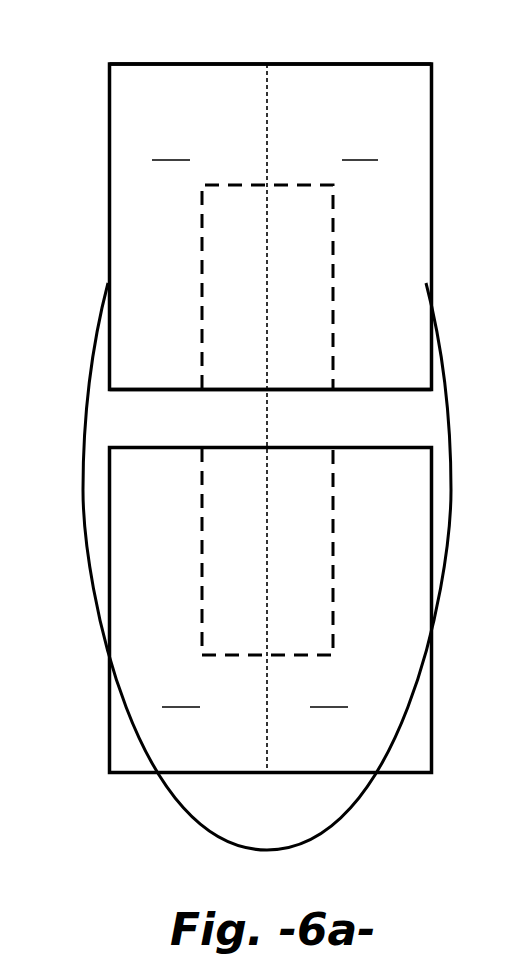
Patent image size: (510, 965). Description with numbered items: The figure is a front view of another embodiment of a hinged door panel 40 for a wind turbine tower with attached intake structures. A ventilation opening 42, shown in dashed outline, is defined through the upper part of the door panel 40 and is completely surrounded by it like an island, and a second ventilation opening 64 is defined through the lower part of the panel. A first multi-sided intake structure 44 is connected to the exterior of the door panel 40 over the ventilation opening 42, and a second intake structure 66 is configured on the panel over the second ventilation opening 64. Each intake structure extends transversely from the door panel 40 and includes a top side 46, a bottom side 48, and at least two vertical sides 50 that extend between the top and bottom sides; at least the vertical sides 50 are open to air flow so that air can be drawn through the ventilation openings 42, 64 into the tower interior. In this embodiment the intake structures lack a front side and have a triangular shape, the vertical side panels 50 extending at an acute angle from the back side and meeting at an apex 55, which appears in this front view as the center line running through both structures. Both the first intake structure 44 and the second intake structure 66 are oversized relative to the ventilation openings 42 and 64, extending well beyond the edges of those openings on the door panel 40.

The door panel 40 is at (108, 423).
The ventilation opening 42 is at (335, 261).
The multi-sided intake structure 44 is at (436, 93).
The top side 46 is at (212, 64).
The bottom side 48 is at (297, 392).
The vertical sides 50 is at (265, 420).
The apex 55 is at (270, 128).
The second ventilation opening 64 is at (335, 559).
The second intake structure 66 is at (436, 730).